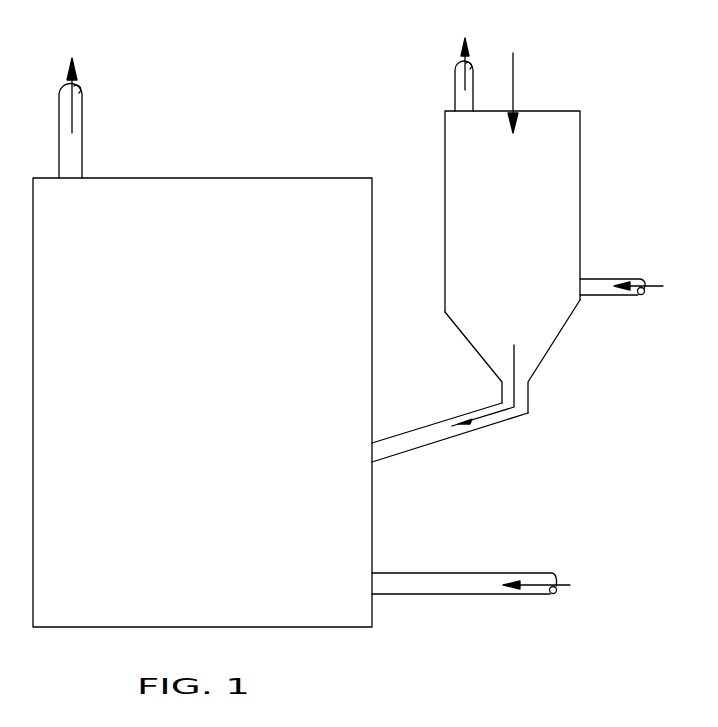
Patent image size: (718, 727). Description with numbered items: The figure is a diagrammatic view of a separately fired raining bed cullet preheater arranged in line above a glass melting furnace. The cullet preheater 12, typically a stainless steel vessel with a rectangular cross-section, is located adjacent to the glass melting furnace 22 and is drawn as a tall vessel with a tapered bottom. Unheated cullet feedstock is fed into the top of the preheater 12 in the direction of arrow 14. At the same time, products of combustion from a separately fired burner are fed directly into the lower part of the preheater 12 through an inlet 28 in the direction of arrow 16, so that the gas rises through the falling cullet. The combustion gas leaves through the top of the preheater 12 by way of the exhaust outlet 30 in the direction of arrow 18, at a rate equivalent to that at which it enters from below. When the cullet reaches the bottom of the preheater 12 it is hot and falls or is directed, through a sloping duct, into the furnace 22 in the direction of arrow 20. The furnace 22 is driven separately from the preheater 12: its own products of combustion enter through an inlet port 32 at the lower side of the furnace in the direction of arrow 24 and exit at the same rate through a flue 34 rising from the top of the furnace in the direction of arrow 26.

The cullet preheater 12 is at (580, 207).
The arrow 14 is at (514, 78).
The arrow 16 is at (653, 287).
The arrow 18 is at (470, 62).
The arrow 20 is at (515, 390).
The glass melting furnace 22 is at (372, 322).
The arrow 24 is at (540, 596).
The arrow 26 is at (72, 108).
The inlet 28 is at (600, 278).
The exhaust outlet 30 is at (456, 86).
The inlet port 32 is at (413, 572).
The flue 34 is at (58, 127).